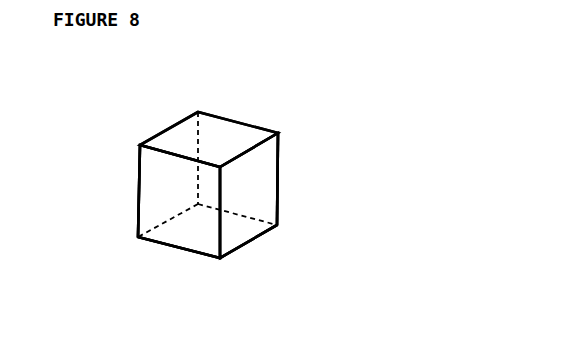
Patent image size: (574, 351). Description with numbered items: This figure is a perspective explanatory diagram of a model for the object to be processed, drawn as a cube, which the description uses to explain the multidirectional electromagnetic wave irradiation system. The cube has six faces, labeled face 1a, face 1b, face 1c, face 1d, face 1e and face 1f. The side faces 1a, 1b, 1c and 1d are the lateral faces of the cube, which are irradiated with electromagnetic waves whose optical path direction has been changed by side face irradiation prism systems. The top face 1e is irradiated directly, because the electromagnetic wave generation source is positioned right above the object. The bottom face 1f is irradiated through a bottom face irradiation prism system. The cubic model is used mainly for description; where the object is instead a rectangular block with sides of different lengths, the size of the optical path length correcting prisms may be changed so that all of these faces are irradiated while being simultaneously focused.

The face of object to be processed 1a is at (162, 208).
The face of object to be processed 1b is at (280, 167).
The face of object to be processed 1c is at (250, 210).
The face of object to be processed 1d is at (138, 173).
The top face of object to be processed 1e is at (227, 138).
The bottom face of object to be processed 1f is at (236, 244).